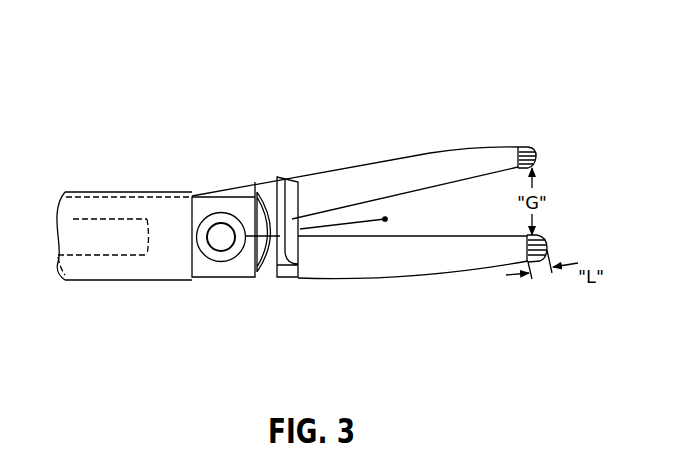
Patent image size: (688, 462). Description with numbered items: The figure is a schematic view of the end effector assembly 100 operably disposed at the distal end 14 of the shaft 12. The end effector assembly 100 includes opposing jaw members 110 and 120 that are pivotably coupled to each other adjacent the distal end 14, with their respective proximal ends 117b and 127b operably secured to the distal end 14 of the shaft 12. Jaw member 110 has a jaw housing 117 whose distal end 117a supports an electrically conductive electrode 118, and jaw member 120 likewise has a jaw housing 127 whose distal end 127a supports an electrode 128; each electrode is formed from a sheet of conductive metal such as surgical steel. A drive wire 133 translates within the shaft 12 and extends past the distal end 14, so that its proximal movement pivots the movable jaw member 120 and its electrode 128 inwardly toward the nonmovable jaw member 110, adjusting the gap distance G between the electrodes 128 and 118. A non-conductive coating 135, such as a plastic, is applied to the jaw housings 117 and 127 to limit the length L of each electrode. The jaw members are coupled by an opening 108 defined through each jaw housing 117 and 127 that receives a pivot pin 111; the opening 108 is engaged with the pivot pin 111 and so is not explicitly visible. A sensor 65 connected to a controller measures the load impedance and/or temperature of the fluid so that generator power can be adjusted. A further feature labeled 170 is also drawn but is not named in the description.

The end effector assembly 100 is at (554, 80).
The shaft 12 is at (88, 281).
The distal end 14 is at (187, 190).
The drive wire 133 is at (97, 198).
The knife assembly 170 is at (63, 280).
The opening 108 is at (210, 258).
The pivot pin 111 is at (223, 236).
The proximal end 117b is at (263, 281).
The proximal end 127b is at (257, 185).
The jaw member 120 is at (490, 147).
The jaw housing 127 is at (394, 151).
The non-conductive coating 135 is at (365, 175).
The distal end 127a is at (521, 146).
The electrode 128 is at (536, 166).
The sensor 65 is at (385, 219).
The jaw member 110 is at (479, 271).
The jaw housing 117 is at (374, 287).
The distal end 117a is at (548, 246).
The electrode 118 is at (537, 235).